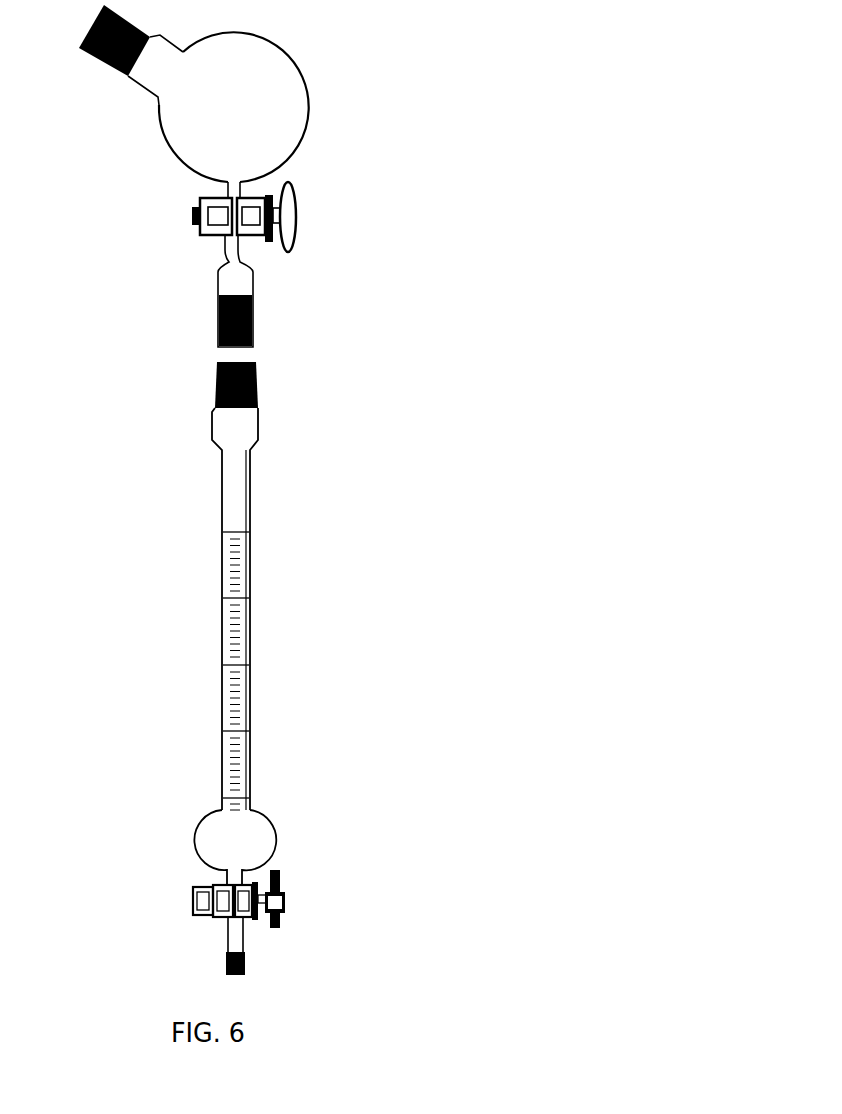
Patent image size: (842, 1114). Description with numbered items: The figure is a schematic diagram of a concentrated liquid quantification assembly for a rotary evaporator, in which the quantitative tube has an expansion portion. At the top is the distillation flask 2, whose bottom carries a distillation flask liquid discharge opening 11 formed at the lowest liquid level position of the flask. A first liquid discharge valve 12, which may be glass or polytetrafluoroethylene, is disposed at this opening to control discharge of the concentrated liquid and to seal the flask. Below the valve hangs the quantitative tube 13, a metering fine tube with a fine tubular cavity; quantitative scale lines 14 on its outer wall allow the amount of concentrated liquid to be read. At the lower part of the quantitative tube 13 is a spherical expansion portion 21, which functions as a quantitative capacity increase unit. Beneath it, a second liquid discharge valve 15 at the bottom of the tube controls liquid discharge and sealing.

The distillation flask 2 is at (240, 110).
The distillation flask liquid discharge opening 11 is at (237, 193).
The first liquid discharge valve 12 is at (288, 218).
The quantitative tube 13 is at (235, 477).
The quantitative scale line 14 is at (240, 602).
The expansion portion 21 is at (240, 835).
The second liquid discharge valve 15 is at (275, 900).